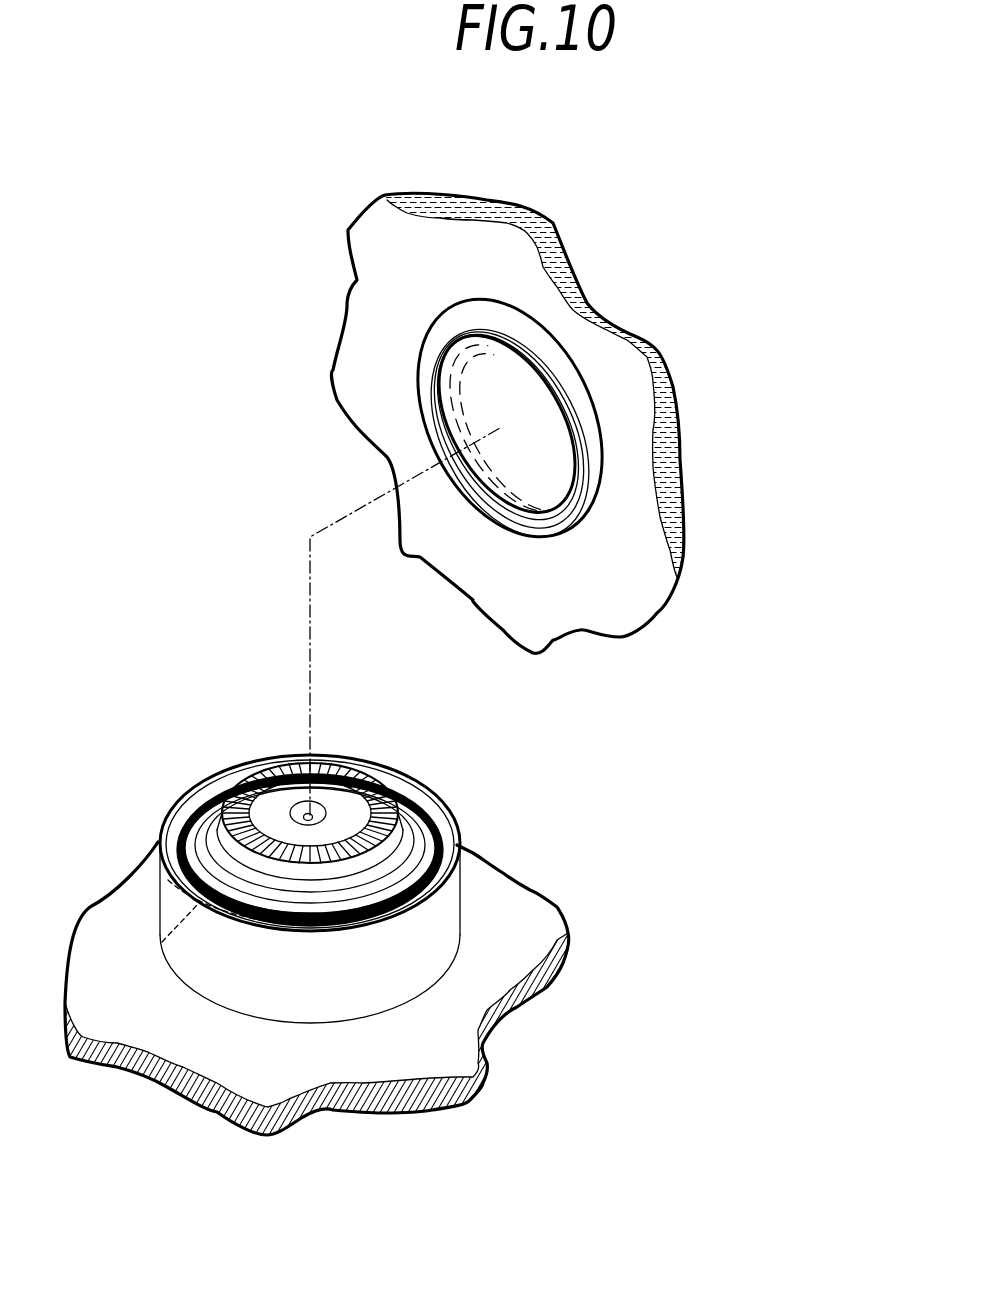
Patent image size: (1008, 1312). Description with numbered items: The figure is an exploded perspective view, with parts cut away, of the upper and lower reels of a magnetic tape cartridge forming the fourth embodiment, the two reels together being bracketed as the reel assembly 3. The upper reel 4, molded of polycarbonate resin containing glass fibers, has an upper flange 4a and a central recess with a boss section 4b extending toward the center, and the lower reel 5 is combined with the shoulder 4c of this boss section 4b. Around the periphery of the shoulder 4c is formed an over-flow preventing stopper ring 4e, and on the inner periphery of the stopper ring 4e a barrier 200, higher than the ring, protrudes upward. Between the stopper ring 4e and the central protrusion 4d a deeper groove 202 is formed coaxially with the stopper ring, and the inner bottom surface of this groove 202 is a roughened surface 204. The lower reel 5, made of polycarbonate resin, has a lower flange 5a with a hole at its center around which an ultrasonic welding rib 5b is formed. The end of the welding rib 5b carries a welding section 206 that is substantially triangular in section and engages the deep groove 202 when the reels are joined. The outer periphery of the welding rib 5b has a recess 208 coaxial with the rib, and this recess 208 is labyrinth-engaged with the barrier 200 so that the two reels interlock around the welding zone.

The coupling unit 3 is at (716, 942).
The upper reel 4 is at (565, 936).
The upper flange 4a is at (463, 1030).
The boss section 4b is at (460, 915).
The shoulder 4c is at (327, 785).
The protrusion 4d is at (336, 762).
The over-flow preventing stopper ring 4e is at (256, 928).
The lower reel 5 is at (677, 358).
The lower flange 5a is at (590, 293).
The ultrasonic welding rib 5b is at (556, 372).
The barrier 200 is at (357, 925).
The groove 202 is at (162, 942).
The roughened surface 204 is at (193, 795).
The welding section 206 is at (460, 493).
The recess 208 is at (613, 428).